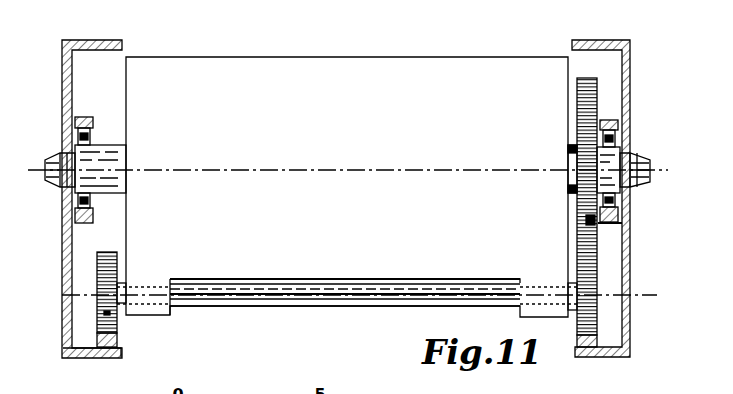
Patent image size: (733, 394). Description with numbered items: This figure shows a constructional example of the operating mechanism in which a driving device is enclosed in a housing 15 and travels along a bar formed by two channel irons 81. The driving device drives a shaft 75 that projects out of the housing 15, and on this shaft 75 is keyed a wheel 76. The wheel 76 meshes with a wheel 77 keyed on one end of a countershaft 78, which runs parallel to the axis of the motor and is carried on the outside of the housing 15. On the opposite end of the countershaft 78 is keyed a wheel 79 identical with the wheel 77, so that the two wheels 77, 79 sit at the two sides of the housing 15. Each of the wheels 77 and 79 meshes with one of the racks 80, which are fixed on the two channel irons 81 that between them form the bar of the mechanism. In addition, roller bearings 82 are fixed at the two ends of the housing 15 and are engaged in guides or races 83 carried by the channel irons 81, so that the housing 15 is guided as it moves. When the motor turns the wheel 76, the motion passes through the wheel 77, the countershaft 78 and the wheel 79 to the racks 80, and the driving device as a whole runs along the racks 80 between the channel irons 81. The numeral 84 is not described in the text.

The housing 15 is at (450, 78).
The shaft 75 is at (602, 150).
The wheel 76 is at (597, 223).
The wheel 77 is at (592, 275).
The countershaft 78 is at (268, 294).
The wheel 79 is at (112, 323).
The racks 80 is at (100, 349).
The channel irons 81 is at (69, 285).
The roller bearings 82 is at (78, 213).
The guides or races 83 is at (82, 120).
The housing wall 84 is at (628, 305).